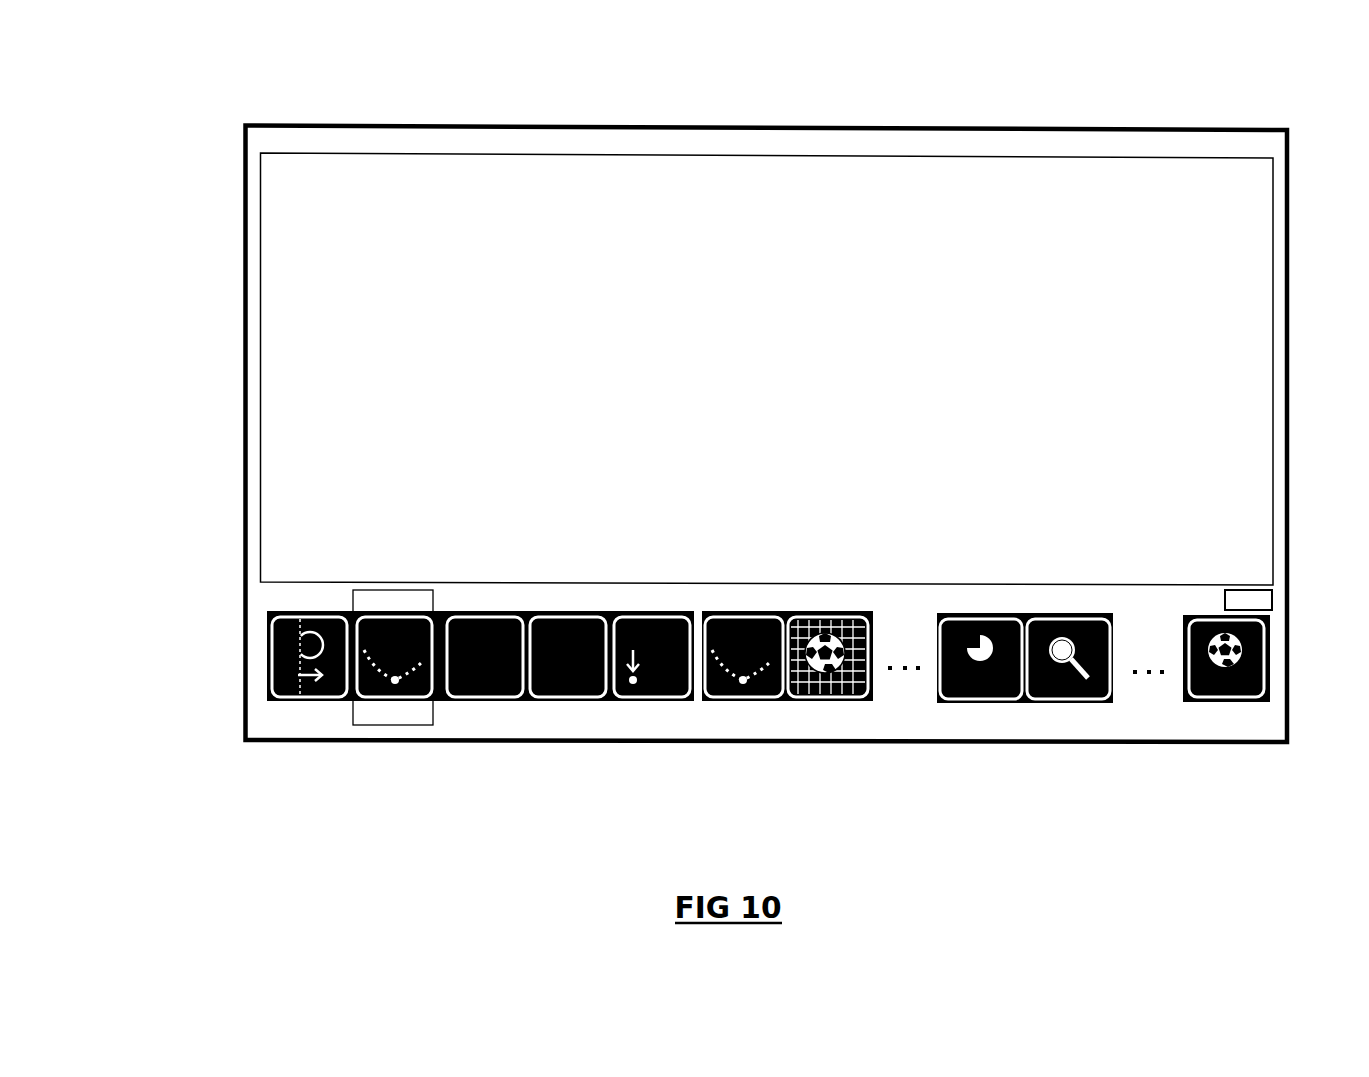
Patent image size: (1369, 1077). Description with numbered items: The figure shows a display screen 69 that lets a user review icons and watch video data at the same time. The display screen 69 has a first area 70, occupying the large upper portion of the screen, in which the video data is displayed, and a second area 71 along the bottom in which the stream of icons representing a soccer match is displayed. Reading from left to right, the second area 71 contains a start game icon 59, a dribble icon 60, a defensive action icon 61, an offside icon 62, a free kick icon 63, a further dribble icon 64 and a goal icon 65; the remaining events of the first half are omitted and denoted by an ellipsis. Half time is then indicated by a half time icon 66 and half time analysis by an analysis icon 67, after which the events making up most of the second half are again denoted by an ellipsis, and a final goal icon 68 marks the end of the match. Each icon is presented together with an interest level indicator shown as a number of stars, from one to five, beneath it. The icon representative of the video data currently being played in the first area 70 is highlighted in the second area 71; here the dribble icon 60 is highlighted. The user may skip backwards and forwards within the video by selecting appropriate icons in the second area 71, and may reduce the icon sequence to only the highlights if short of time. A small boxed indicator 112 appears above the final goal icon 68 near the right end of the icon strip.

The start game icon 59 is at (309, 657).
The dribble icon 60 is at (396, 657).
The defensive action icon 61 is at (483, 657).
The offside icon 62 is at (568, 657).
The free kick icon 63 is at (652, 657).
The further dribble icon 64 is at (744, 657).
The goal icon 65 is at (829, 657).
The half time icon 66 is at (981, 657).
The analysis icon 67 is at (1069, 657).
The final goal icon 68 is at (1226, 657).
The display screen 69 is at (1109, 129).
The first area 70 is at (840, 157).
The second area 71 is at (267, 712).
The event time indicator 112 is at (1248, 600).